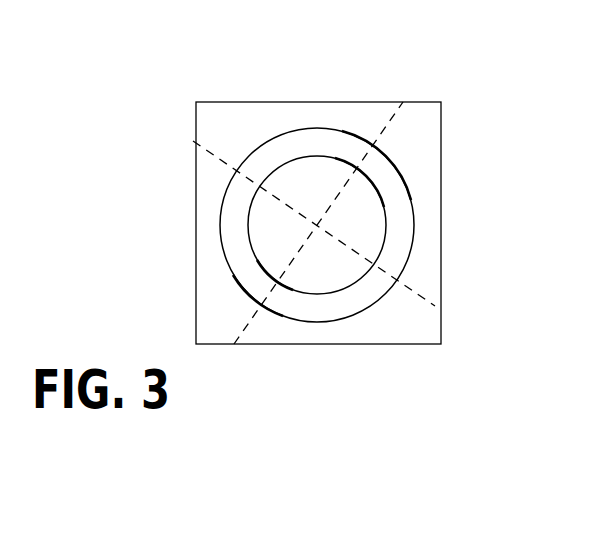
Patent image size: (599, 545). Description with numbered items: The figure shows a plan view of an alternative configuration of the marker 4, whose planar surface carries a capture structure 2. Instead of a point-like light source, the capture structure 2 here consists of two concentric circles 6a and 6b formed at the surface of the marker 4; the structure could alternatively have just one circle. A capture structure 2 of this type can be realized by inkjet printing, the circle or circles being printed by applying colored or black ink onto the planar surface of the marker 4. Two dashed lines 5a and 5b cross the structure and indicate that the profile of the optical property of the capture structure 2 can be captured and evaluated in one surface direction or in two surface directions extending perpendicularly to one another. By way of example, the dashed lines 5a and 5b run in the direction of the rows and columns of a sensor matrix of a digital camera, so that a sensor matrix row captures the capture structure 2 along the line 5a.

The capture structure 2 is at (359, 212).
The marker 4 is at (320, 102).
The dashed line 5a is at (252, 318).
The dashed line 5b is at (420, 289).
The concentric circle 6a is at (256, 256).
The concentric circle 6b is at (412, 203).